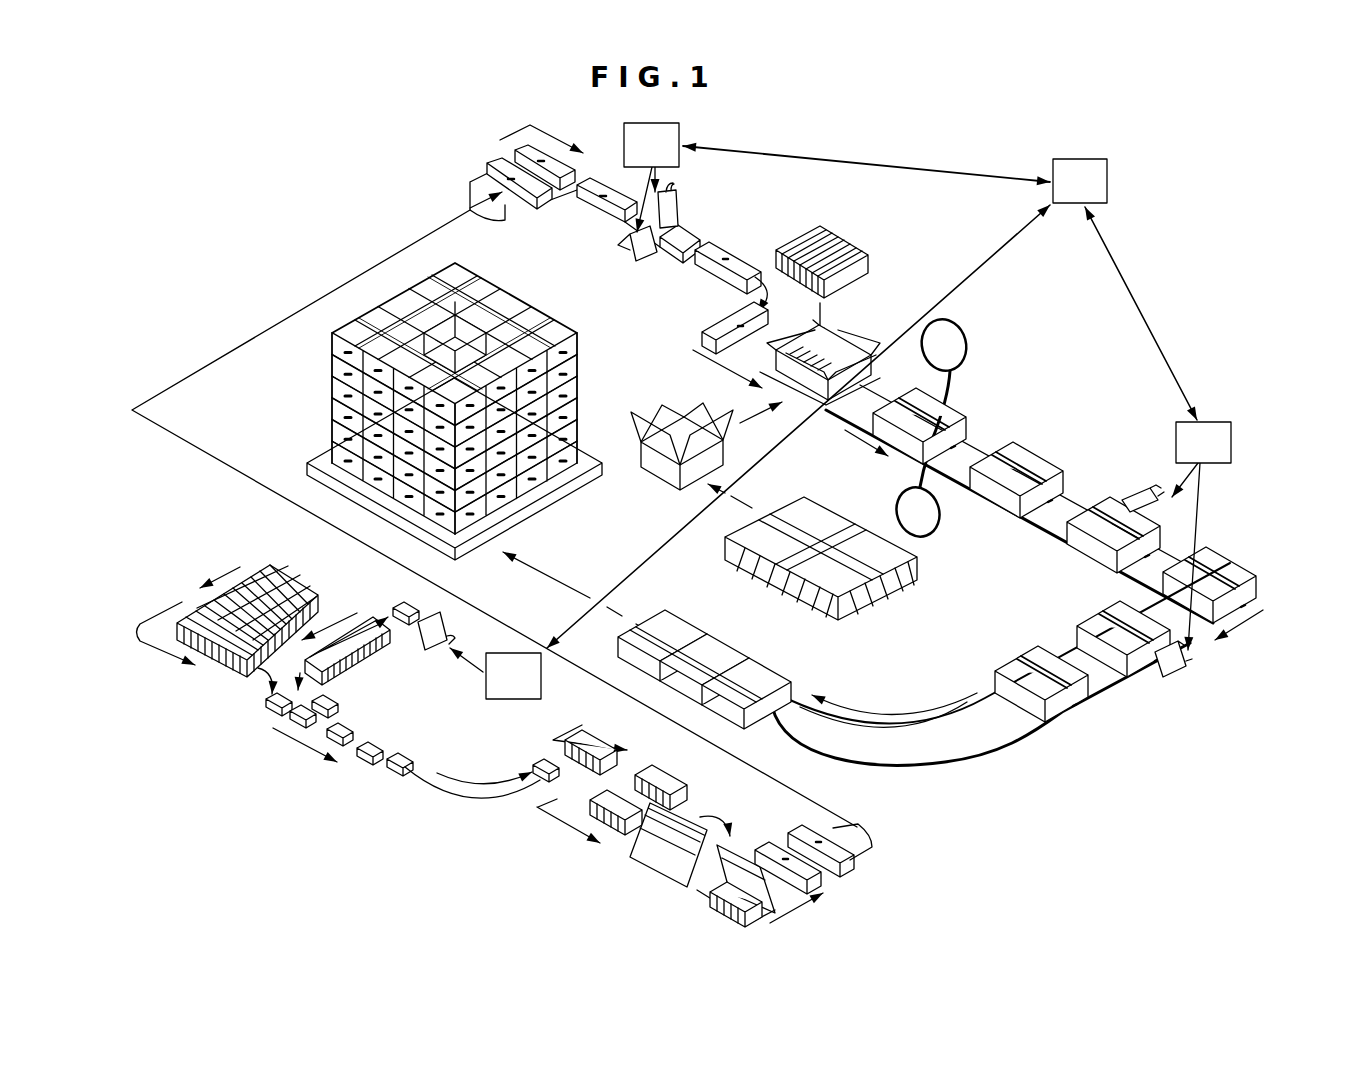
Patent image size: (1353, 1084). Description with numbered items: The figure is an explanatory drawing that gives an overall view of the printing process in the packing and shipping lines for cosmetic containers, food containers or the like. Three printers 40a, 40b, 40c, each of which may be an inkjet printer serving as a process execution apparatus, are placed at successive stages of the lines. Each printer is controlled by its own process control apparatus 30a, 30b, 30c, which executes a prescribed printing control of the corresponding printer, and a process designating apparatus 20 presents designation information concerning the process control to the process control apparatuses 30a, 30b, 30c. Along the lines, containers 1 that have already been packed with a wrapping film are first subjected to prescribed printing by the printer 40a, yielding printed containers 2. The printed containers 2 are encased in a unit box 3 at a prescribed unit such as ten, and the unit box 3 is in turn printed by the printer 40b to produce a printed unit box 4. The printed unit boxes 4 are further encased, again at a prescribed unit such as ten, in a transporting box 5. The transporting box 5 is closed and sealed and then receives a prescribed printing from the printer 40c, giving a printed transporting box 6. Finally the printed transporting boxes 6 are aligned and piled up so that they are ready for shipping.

The container 1 is at (397, 604).
The printed container 2 is at (348, 663).
The unit box 3 is at (835, 868).
The printed unit box 4 is at (694, 228).
The transporting box 5 is at (850, 318).
The printed transporting box 6 is at (1105, 610).
The process designating apparatus 20 is at (1108, 195).
The process control apparatus 30a is at (497, 699).
The process control apparatus 30b is at (680, 163).
The process control apparatus 30c is at (1232, 422).
The printer 40a is at (424, 648).
The printer 40b is at (666, 232).
The printer 40c is at (1168, 712).